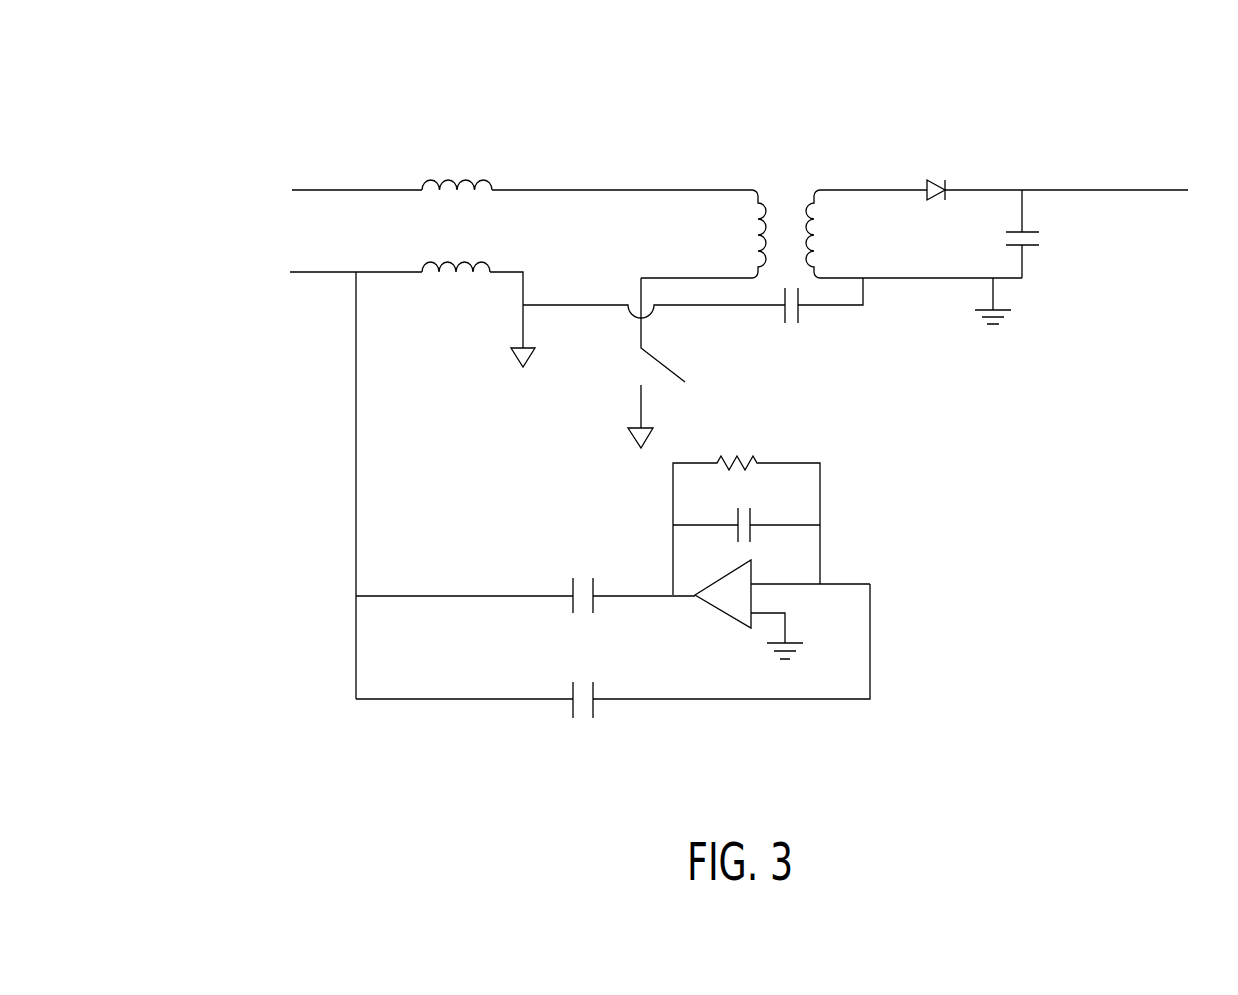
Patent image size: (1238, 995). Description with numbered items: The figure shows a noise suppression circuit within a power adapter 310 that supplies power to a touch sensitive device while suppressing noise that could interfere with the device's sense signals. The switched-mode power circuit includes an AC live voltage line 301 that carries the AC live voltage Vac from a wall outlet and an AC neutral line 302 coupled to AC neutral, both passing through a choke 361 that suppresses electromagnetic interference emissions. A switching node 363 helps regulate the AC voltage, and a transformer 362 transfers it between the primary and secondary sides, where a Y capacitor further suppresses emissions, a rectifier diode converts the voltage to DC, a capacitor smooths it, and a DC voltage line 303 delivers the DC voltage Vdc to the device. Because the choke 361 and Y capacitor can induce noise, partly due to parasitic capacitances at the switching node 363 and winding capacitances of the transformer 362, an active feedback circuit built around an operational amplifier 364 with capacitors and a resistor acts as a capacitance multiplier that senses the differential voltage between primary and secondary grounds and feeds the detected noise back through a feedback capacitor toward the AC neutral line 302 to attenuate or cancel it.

The power adapter 310 is at (157, 162).
The AC live voltage line 301 is at (345, 190).
The AC neutral line 302 is at (307, 272).
The DC voltage line 303 is at (1118, 188).
The choke 361 is at (465, 178).
The transformer 362 is at (777, 197).
The switching node 363 is at (612, 402).
The operational amplifier 364 is at (720, 618).